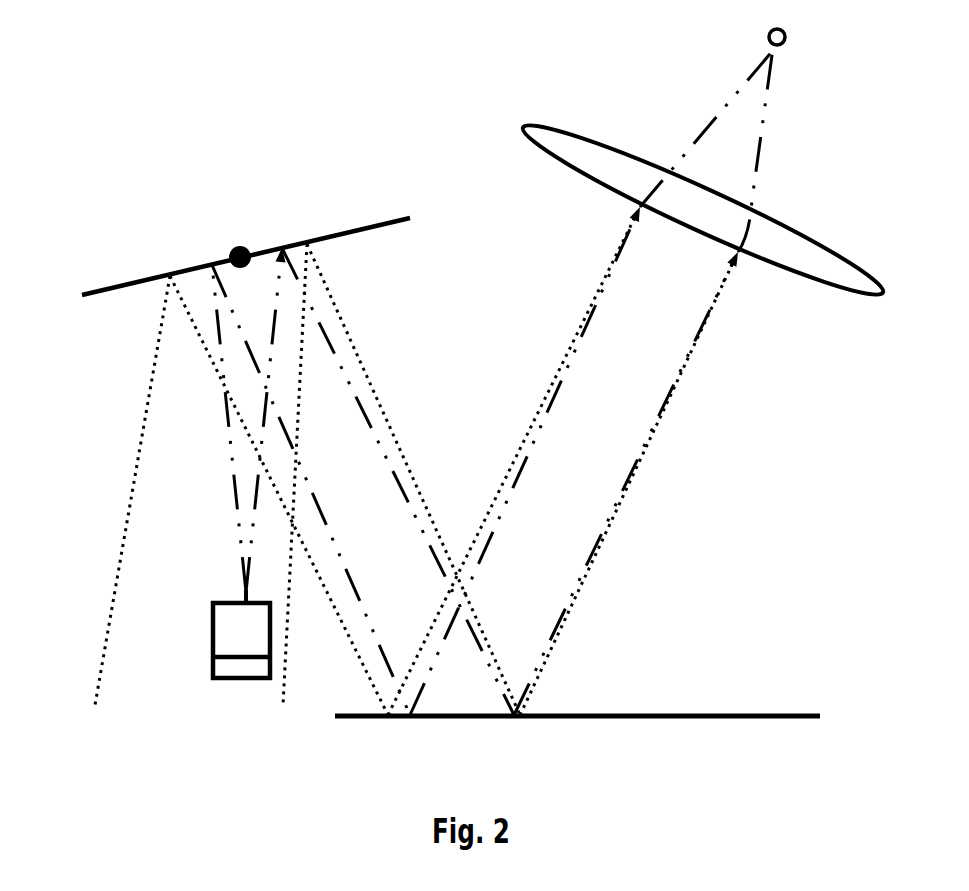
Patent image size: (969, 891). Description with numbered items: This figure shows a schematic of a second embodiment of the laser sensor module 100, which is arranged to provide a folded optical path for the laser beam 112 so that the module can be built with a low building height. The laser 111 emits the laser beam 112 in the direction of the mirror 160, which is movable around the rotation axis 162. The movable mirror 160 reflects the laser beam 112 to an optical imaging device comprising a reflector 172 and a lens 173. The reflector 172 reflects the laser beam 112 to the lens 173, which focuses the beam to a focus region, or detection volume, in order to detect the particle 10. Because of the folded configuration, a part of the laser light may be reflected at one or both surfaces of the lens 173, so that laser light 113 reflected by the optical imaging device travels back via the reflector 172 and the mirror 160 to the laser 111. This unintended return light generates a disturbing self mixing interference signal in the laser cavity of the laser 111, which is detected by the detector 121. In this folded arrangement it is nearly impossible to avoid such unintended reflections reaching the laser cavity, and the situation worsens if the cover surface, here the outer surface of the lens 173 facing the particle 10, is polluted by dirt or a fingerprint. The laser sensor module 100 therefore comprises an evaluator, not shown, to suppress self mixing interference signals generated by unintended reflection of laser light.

The laser sensor module 100 is at (119, 97).
The particle 10 is at (787, 43).
The mirror 160 is at (153, 279).
The rotation axis 162 is at (236, 250).
The lens 173 is at (797, 280).
The reflector 172 is at (771, 713).
The laser light reflected by the optical imaging device 113 is at (132, 502).
The laser beam 112 is at (232, 500).
The laser 111 is at (212, 620).
The detector 121 is at (212, 668).